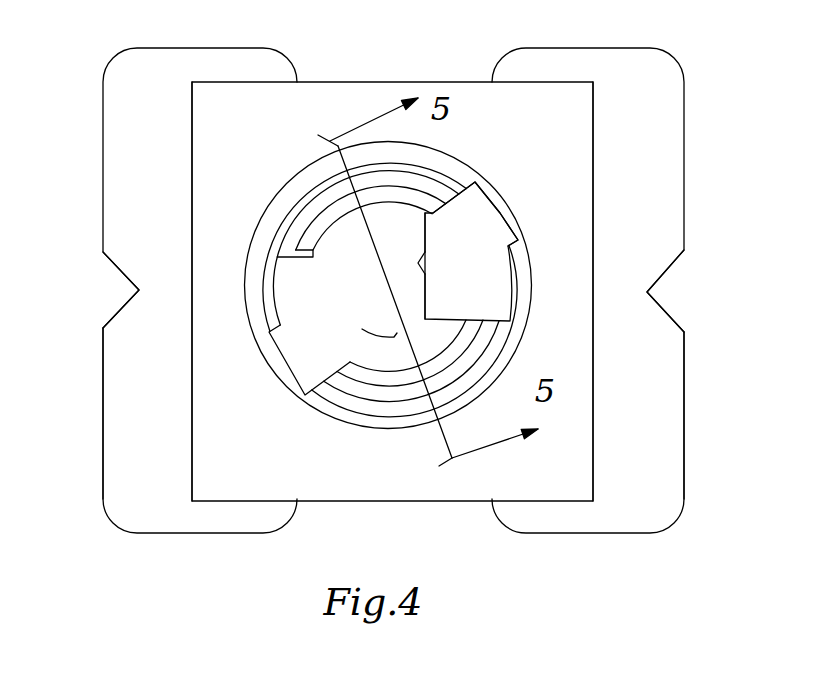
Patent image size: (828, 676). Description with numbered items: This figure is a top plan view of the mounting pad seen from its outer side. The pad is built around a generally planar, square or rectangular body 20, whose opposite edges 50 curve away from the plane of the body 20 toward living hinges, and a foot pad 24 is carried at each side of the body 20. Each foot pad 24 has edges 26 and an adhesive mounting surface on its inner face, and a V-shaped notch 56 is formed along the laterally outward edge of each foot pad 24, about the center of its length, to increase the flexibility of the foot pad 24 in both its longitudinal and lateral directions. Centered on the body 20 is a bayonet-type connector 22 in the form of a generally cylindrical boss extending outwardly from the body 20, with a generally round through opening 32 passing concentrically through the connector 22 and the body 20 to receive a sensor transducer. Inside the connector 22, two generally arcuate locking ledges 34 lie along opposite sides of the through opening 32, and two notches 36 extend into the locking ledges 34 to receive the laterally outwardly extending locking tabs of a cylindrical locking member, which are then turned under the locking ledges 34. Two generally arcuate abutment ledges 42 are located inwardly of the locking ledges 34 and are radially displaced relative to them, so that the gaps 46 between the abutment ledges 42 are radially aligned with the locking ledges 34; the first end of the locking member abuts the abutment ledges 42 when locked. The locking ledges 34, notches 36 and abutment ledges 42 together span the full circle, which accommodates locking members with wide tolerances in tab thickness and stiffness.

The body 20 is at (343, 82).
The bayonet-type connector 22 is at (378, 433).
The foot pad 24 is at (175, 540).
The edges 26 is at (103, 373).
The through opening 32 is at (375, 335).
The locking ledge 34 is at (274, 285).
The notch 36 is at (279, 362).
The abutment ledge 42 is at (330, 231).
The gap 46 is at (404, 266).
The opposite edges 50 is at (192, 196).
The V-shaped notch 56 is at (122, 302).